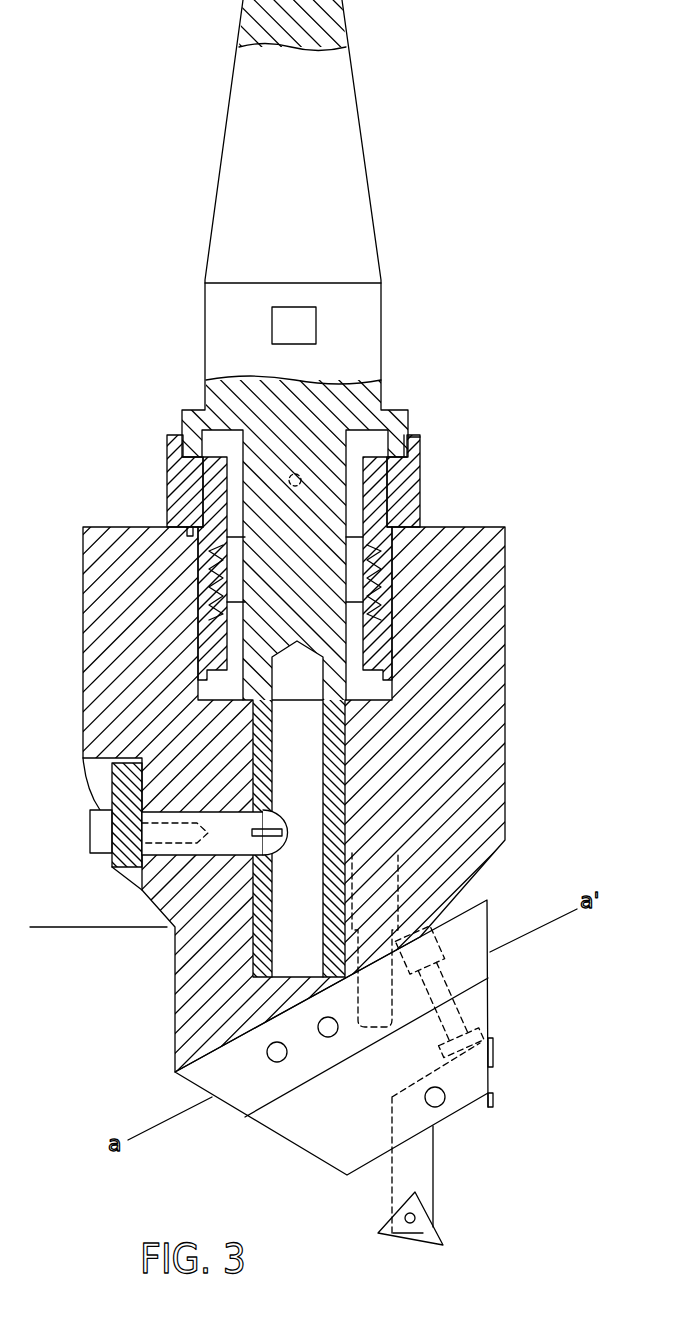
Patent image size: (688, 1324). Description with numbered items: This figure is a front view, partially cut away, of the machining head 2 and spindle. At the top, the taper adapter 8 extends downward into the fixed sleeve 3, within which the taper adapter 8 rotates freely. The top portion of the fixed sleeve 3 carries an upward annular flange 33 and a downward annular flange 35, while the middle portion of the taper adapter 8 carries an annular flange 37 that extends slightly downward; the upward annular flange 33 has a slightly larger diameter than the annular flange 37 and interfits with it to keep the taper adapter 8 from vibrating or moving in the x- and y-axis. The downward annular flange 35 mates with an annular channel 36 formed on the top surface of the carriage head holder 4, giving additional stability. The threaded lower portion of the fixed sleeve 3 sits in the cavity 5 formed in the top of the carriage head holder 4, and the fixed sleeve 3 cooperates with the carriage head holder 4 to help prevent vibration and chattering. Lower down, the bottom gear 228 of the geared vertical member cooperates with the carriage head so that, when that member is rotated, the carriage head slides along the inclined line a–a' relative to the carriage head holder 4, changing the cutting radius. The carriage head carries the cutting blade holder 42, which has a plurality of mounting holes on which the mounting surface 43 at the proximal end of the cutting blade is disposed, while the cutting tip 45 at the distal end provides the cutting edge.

The taper adapter 8 is at (357, 163).
The machining head 2 is at (482, 662).
The fixed sleeve 3 is at (215, 572).
The cavity 5 is at (207, 643).
The downward annular flange 35 is at (400, 525).
The annular channel 36 is at (190, 533).
The annular flange 37 is at (398, 432).
The upward annular flange 33 is at (418, 438).
The bottom gear 228 is at (447, 903).
The carriage head holder 4 is at (475, 975).
The cutting blade holder 42 is at (432, 1043).
The mounting surface 43 is at (420, 1163).
The cutting tip 45 is at (424, 1228).